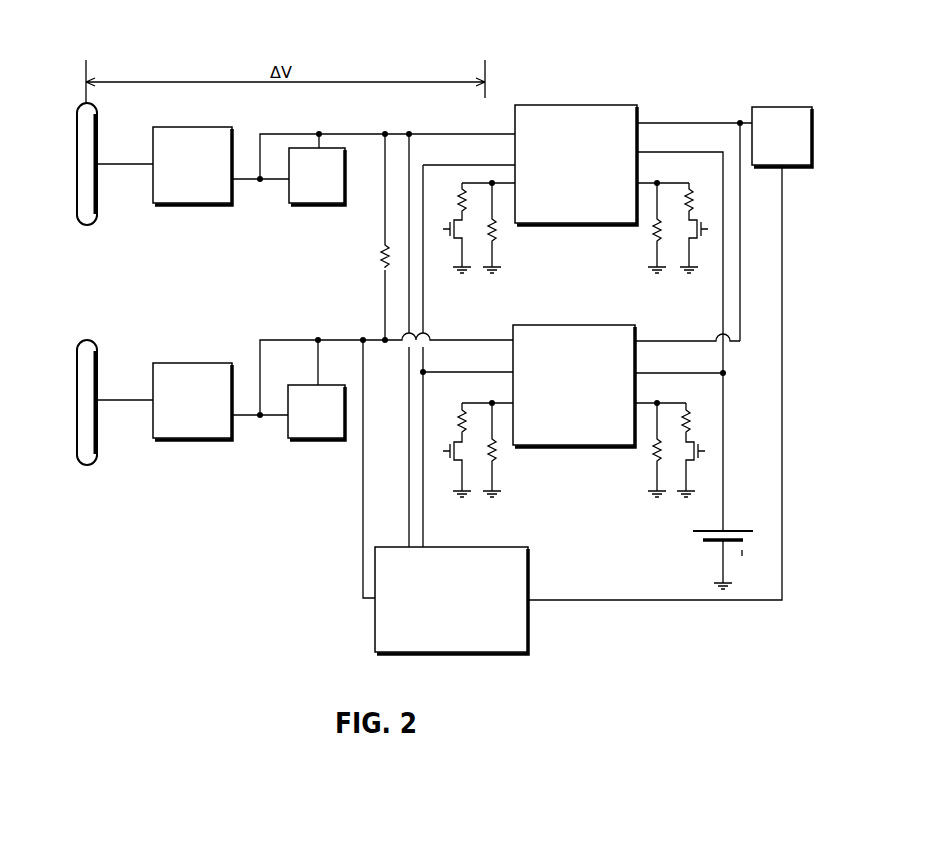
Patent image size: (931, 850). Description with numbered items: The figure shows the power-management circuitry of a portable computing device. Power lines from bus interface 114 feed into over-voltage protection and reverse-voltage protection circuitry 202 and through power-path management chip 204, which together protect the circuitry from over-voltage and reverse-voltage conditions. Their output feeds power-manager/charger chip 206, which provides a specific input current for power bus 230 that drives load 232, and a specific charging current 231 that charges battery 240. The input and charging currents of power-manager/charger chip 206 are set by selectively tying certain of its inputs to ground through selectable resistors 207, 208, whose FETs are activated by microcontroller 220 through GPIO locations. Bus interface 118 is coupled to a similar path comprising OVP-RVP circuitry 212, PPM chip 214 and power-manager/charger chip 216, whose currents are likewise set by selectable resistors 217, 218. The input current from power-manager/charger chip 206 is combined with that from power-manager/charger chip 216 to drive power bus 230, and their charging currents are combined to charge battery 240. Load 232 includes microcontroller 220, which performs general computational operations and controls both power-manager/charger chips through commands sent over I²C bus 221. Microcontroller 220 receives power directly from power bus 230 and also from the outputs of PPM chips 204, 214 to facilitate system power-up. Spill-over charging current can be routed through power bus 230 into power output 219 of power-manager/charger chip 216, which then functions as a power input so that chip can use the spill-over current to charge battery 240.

The bus interface 114 is at (101, 197).
The bus interface 118 is at (101, 435).
The over-voltage protection and reverse-voltage protection (OVP-RVP) circuitry 202 is at (192, 166).
The power-path management (PPM) chip 204 is at (317, 176).
The power-manager/charger chip 206 is at (576, 165).
The selectable resistor network 207 is at (479, 240).
The selectable resistor network 208 is at (672, 240).
The OVP-RVP circuitry 212 is at (192, 401).
The PPM chip 214 is at (316, 412).
The power-manager/charger chip 216 is at (574, 386).
The selectable resistor network 217 is at (478, 441).
The selectable resistor network 218 is at (670, 457).
The power output 219 is at (687, 332).
The microcontroller 220 is at (451, 600).
The I²C bus 221 is at (466, 364).
The power bus (PBUS) 230 is at (694, 222).
The charging current 231 is at (652, 152).
The load 232 is at (670, 353).
The battery 240 is at (697, 552).